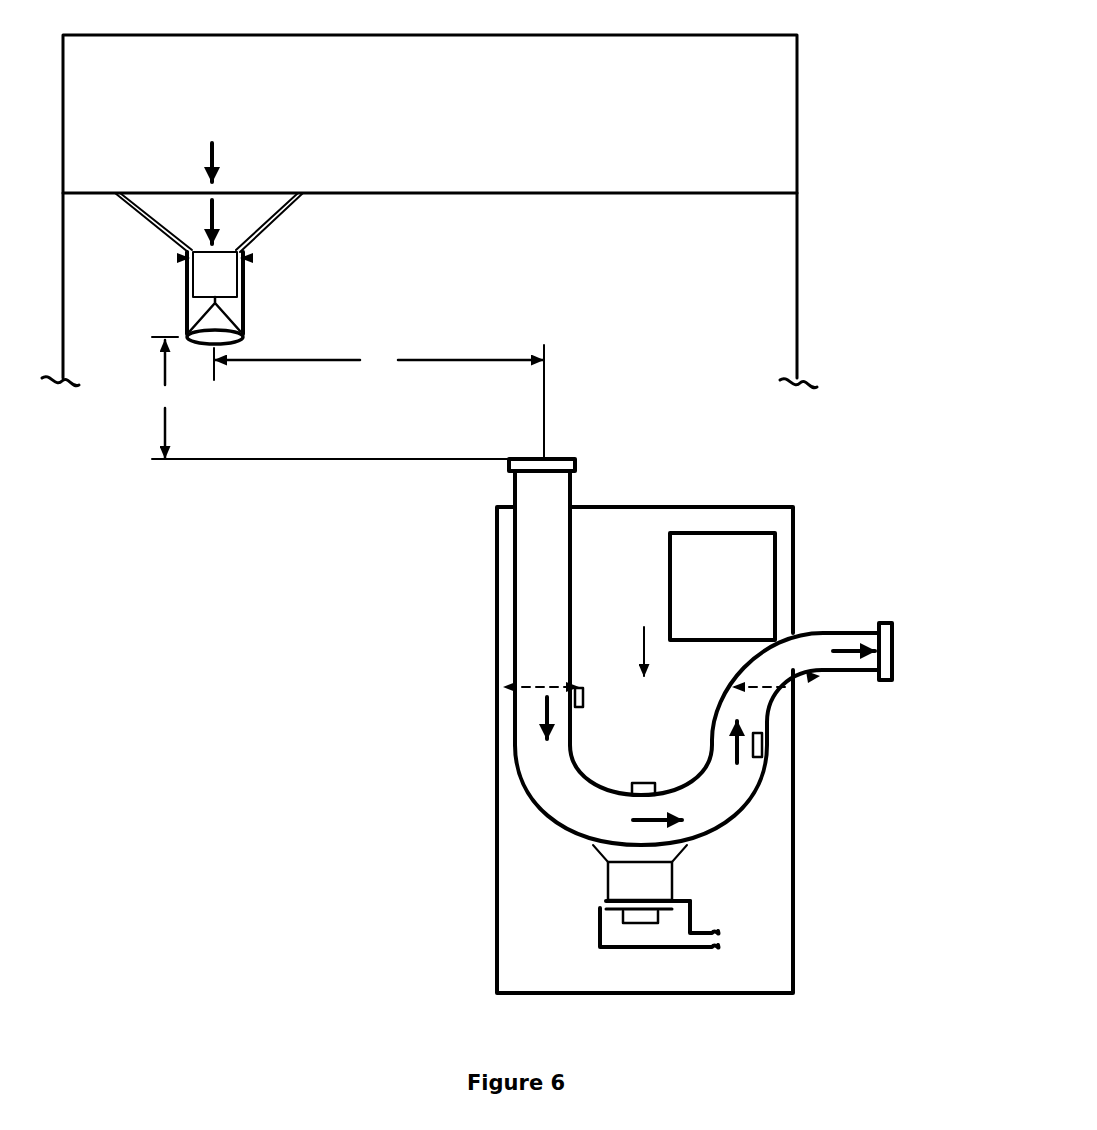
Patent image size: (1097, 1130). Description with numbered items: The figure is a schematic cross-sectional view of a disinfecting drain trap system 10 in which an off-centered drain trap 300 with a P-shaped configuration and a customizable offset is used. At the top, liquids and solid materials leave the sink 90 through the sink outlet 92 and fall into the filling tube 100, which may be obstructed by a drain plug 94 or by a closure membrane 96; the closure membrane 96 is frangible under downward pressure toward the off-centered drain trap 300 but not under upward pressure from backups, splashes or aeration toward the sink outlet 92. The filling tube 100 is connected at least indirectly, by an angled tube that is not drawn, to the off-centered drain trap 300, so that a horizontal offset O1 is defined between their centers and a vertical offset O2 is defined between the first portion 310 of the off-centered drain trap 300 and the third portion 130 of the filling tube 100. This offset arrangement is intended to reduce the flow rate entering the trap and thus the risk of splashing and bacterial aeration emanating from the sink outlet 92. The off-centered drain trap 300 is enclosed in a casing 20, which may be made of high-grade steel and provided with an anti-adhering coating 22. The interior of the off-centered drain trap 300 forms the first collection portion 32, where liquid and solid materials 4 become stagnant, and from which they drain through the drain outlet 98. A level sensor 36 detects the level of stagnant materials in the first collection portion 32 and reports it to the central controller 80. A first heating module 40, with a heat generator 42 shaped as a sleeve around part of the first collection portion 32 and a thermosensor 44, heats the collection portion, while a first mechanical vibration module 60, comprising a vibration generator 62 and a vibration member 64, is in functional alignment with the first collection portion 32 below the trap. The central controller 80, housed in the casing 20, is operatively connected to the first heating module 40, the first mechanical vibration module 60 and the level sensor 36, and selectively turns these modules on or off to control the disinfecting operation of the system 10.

The disinfecting drain trap system 10 is at (878, 316).
The sink 90 is at (820, 124).
The sink outlet 92 is at (213, 179).
The drain plug 94 is at (255, 218).
The closure membrane 96 is at (232, 312).
The filling tube 100 is at (178, 313).
The third portion of the filling tube 130 is at (252, 337).
The horizontal offset O1 is at (379, 401).
The vertical offset O2 is at (328, 398).
The first portion of the off-centered drain trap 310 is at (584, 459).
The casing 20 is at (812, 526).
The anti-adhering coating 22 is at (799, 584).
The central controller 80 is at (722, 586).
The off-centered drain trap 300 is at (644, 636).
The heat generator 42 is at (548, 823).
The liquid and solid materials 4 is at (729, 709).
The first collection portion 32 is at (689, 742).
The thermosensor 44 is at (588, 714).
The first heating module 40 is at (664, 786).
The level sensor 36 is at (764, 742).
The drain outlet 98 is at (908, 632).
The first mechanical vibration module 60 is at (591, 898).
The vibration member 64 is at (612, 881).
The vibration generator 62 is at (648, 912).